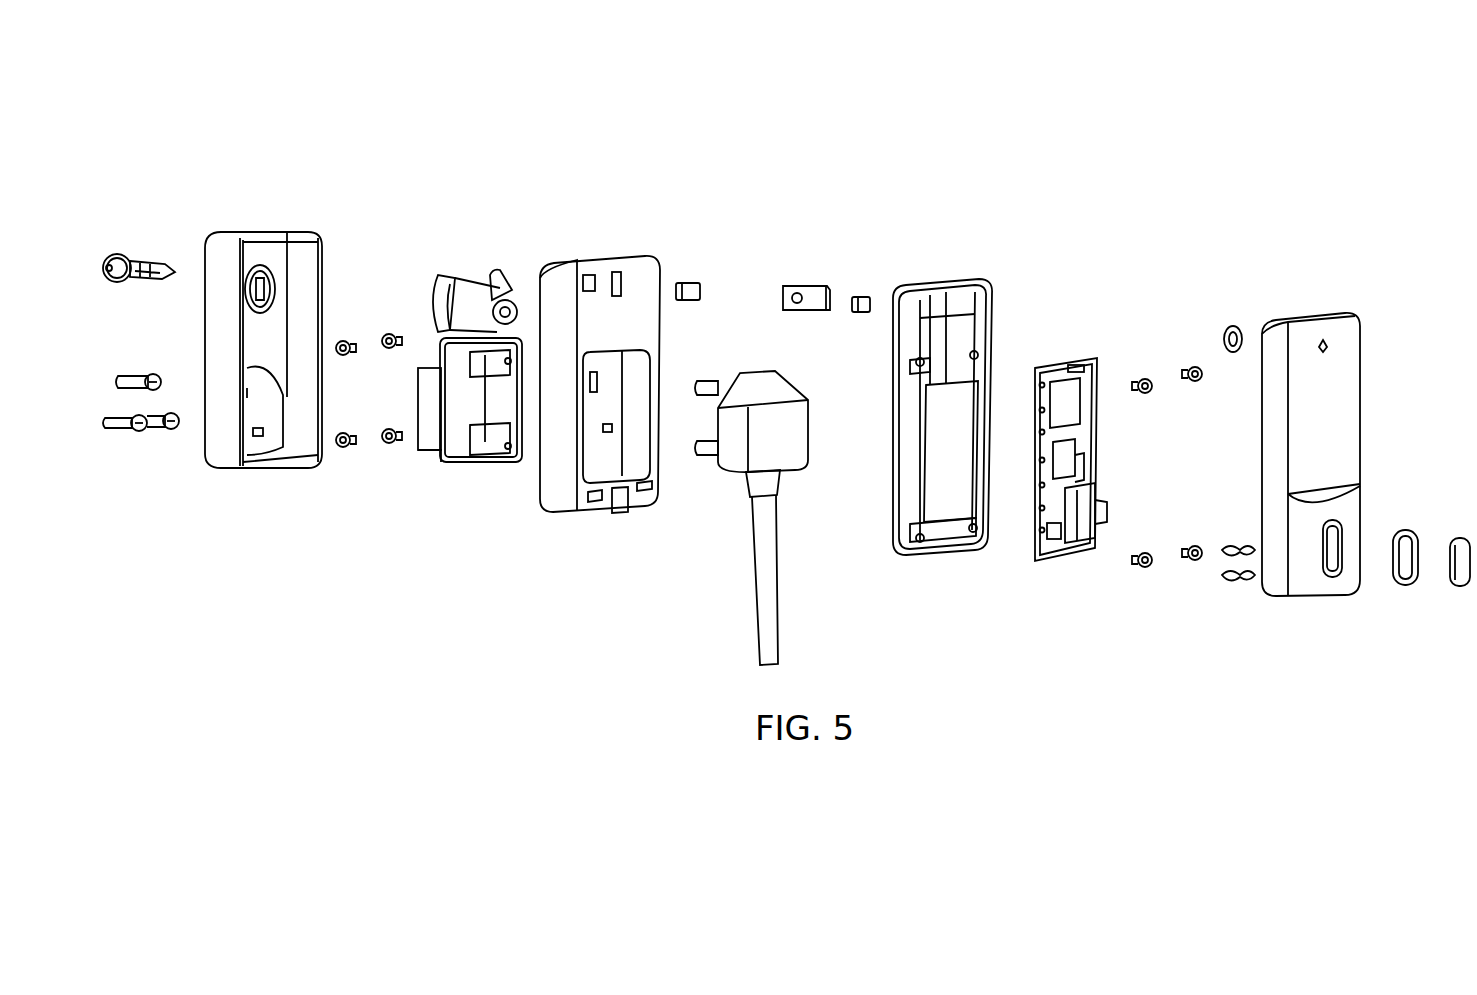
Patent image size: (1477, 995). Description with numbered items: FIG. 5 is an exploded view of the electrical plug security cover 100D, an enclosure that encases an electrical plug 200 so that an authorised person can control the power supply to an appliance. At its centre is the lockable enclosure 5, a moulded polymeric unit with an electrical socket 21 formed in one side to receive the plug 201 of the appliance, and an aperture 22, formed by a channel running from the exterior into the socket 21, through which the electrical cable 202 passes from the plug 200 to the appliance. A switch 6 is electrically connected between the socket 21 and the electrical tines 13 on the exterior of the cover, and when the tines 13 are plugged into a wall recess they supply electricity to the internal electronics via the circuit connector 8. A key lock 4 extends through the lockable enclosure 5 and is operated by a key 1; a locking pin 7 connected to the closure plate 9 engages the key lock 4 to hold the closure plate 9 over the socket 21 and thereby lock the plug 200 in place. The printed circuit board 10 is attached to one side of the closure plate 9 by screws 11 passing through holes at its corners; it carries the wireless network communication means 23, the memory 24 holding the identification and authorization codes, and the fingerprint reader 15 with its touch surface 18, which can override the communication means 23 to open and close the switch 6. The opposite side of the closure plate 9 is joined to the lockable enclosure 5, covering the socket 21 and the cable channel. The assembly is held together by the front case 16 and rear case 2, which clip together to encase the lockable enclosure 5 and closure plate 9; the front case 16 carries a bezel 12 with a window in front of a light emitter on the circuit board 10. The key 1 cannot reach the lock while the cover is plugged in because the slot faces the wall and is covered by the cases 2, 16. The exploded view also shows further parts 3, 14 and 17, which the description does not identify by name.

The electrical plug security cover 100D is at (830, 172).
The key 1 is at (146, 260).
The rear case 2 is at (286, 229).
The screws 3 is at (389, 337).
The key lock 4 is at (455, 289).
The lockable enclosure 5 is at (594, 256).
The switch 6 is at (690, 282).
The locking pin 7 is at (813, 287).
The circuit connector 8 is at (861, 297).
The closure plate 9 is at (960, 281).
The printed circuit board 10 is at (1086, 356).
The screws 11 is at (1193, 368).
The bezel 12 is at (1232, 327).
The electrical tines 13 is at (170, 434).
The lock frame 14 is at (437, 458).
The fingerprint reader 15 is at (1082, 540).
The front case 16 is at (1280, 598).
The sealing ring 17 is at (1405, 588).
The touch surface 18 is at (1461, 588).
The electrical socket 21 is at (604, 432).
The aperture 22 is at (625, 492).
The wireless network communication means 23 is at (1065, 390).
The memory 24 is at (1059, 456).
The electrical plug 200 is at (800, 483).
The plug 201 is at (708, 458).
The electrical cable 202 is at (760, 570).